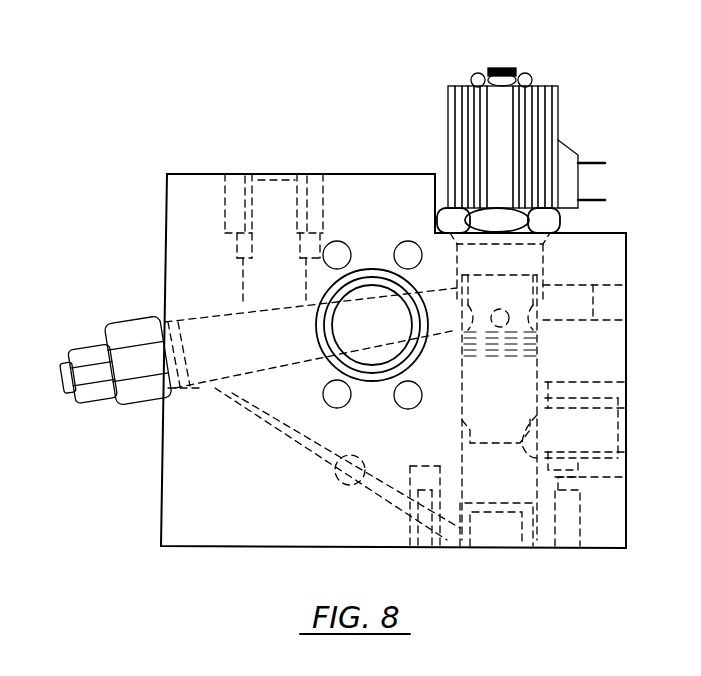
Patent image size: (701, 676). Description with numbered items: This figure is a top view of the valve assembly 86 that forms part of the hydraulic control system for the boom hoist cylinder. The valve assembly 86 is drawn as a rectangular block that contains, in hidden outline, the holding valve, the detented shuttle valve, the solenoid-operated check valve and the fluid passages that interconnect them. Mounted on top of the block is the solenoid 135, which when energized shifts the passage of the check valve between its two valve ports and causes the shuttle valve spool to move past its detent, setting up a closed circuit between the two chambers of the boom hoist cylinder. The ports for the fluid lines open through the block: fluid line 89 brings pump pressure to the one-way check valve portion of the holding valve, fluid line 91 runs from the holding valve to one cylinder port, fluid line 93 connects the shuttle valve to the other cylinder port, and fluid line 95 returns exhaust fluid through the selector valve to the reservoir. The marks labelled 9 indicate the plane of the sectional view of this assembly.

The section line 9- 9 is at (505, 58).
The valve assembly 86 is at (162, 497).
The fluid line 89 is at (274, 173).
The fluid line 91 is at (370, 303).
The fluid line 93 is at (626, 440).
The fluid line 95 is at (518, 548).
The solenoid 135 is at (556, 98).